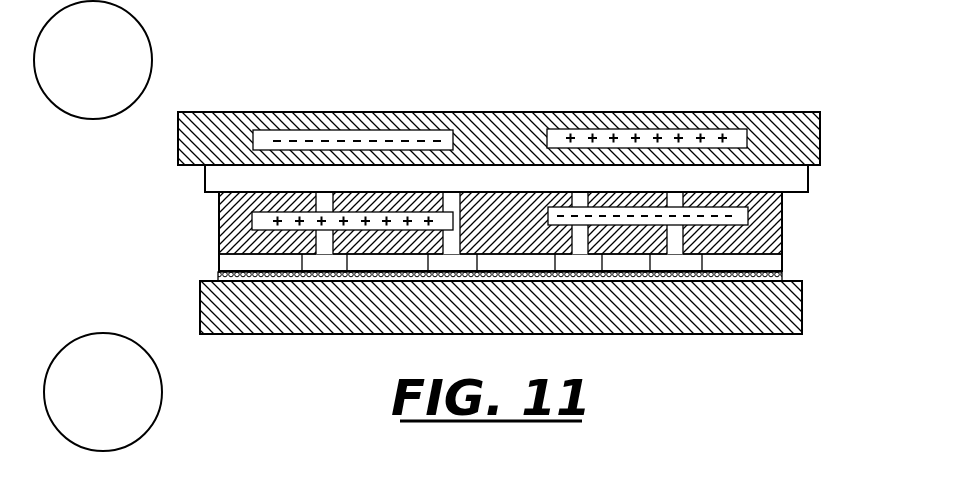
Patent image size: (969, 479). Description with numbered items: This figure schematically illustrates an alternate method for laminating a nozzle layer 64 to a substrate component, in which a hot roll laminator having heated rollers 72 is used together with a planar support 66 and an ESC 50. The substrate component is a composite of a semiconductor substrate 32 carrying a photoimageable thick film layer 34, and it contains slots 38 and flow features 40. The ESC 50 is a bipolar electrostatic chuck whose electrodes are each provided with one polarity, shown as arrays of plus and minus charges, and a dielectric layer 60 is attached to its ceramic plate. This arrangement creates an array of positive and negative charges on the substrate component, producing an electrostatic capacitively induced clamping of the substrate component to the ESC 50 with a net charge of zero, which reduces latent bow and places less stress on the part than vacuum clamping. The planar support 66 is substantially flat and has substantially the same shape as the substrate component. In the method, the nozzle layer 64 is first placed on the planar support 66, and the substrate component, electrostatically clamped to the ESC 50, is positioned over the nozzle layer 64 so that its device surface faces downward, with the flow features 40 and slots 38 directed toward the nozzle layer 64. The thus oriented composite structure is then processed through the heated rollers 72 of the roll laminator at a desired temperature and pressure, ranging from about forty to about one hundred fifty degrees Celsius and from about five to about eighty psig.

The heated rollers 72 is at (81, 73).
The ESC 50 is at (791, 99).
The dielectric layer 60 is at (491, 186).
The substrate 32 is at (521, 228).
The slots 38 is at (674, 240).
The thick film layer 34 is at (757, 259).
The flow features 40 is at (571, 258).
The nozzle layer 64 is at (777, 271).
The planar support 66 is at (401, 314).